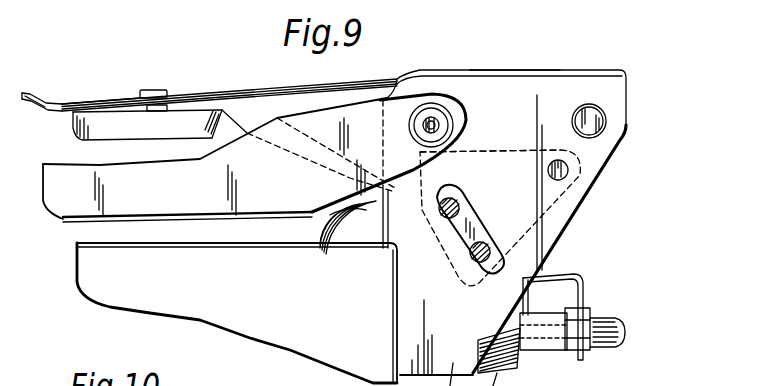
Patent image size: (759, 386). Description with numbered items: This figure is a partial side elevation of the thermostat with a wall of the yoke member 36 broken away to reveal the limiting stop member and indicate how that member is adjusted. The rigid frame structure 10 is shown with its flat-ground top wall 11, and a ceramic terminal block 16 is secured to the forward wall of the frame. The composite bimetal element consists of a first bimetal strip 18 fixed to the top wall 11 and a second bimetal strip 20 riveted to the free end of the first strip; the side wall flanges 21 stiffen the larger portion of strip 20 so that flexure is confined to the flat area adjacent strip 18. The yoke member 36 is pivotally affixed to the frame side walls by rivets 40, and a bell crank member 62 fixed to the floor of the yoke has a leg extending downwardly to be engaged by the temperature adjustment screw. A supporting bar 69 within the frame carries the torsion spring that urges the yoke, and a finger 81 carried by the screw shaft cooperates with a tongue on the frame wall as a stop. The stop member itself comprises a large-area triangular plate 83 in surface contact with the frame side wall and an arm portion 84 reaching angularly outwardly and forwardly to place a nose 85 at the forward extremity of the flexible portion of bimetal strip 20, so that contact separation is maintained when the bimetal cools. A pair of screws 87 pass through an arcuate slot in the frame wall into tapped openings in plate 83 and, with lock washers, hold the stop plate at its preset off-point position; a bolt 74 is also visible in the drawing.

The frame structure 10 is at (507, 133).
The top wall 11 is at (522, 45).
The ceramic terminal block 16 is at (260, 301).
The first bimetal strip 18 is at (249, 92).
The second bimetal strip 20 is at (115, 98).
The side wall flanges 21 is at (29, 93).
The yoke member 36 is at (193, 195).
The rivets 40 is at (434, 118).
The bell crank member 62 is at (342, 228).
The supporting bar 69 is at (602, 118).
The bolt 74 is at (556, 352).
The finger 81 is at (565, 266).
The triangular plate 83 is at (555, 196).
The arm portion 84 is at (193, 93).
The nose 85 is at (72, 116).
The screws 87 is at (484, 245).